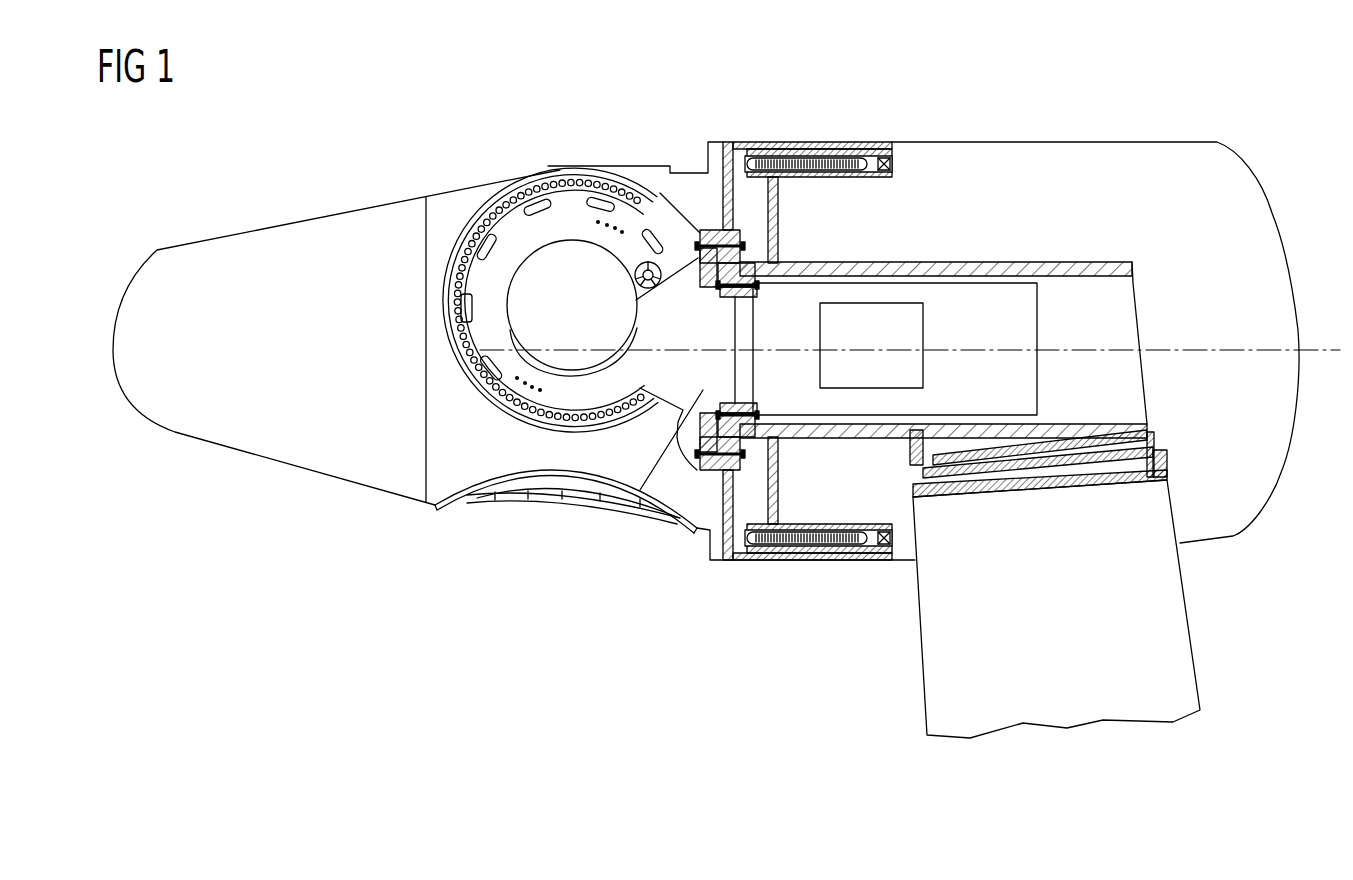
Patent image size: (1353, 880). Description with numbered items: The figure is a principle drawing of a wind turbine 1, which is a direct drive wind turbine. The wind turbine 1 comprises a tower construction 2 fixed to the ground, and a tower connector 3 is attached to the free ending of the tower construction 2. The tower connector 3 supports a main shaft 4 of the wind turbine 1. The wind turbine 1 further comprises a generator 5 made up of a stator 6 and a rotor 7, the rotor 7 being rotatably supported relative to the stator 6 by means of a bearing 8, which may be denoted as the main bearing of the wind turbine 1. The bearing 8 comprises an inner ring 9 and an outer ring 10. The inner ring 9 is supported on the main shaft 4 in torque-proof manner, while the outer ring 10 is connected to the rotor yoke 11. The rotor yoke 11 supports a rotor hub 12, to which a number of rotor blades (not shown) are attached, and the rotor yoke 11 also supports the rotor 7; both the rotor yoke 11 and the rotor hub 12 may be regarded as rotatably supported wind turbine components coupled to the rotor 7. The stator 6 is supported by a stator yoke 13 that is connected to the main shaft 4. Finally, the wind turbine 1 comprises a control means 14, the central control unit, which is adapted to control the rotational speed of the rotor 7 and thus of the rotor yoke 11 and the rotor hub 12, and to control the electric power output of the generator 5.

The wind turbine 1 is at (1255, 634).
The tower construction 2 is at (940, 676).
The tower connector 3 is at (1152, 434).
The main shaft 4 is at (1092, 262).
The generator 5 is at (862, 120).
The stator 6 is at (884, 178).
The rotor 7 is at (808, 142).
The bearing 8 is at (697, 485).
The inner ring 9 is at (640, 490).
The outer ring 10 is at (713, 228).
The rotor yoke 11 is at (730, 142).
The rotor hub 12 is at (440, 210).
The stator yoke 13 is at (779, 203).
The control means 14 is at (866, 378).